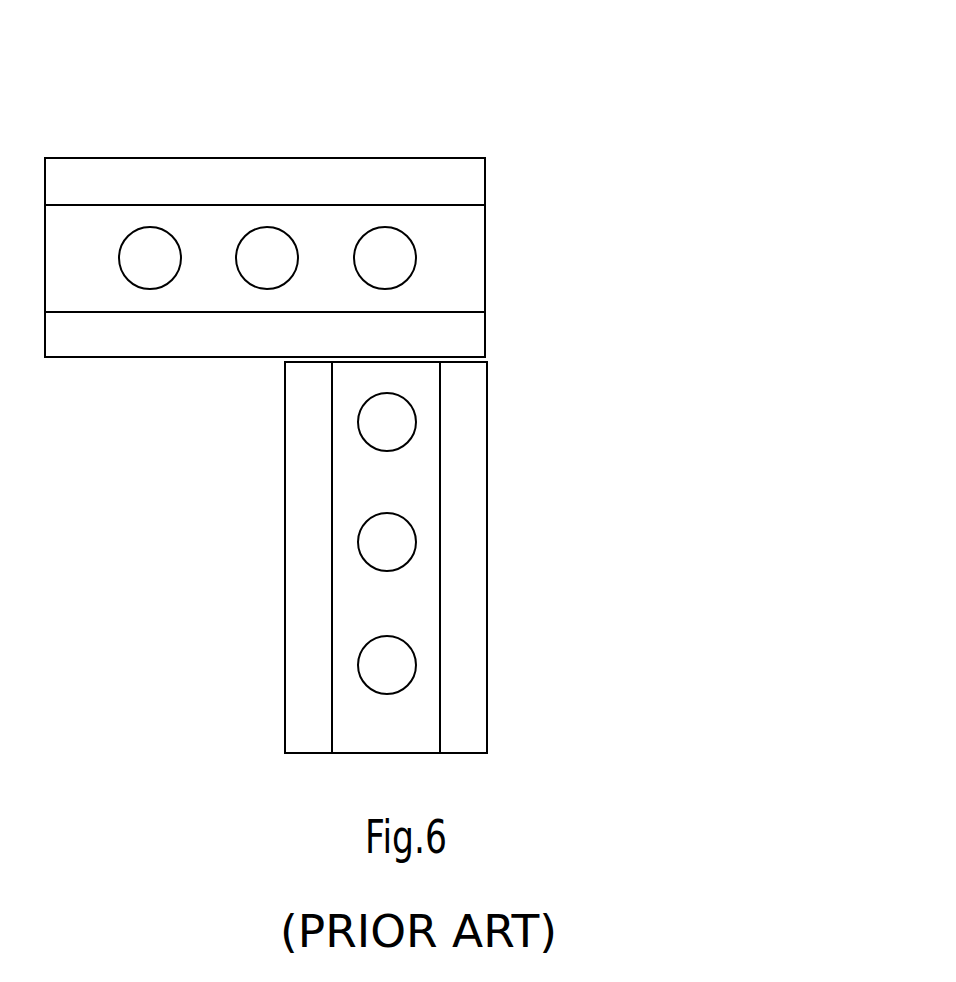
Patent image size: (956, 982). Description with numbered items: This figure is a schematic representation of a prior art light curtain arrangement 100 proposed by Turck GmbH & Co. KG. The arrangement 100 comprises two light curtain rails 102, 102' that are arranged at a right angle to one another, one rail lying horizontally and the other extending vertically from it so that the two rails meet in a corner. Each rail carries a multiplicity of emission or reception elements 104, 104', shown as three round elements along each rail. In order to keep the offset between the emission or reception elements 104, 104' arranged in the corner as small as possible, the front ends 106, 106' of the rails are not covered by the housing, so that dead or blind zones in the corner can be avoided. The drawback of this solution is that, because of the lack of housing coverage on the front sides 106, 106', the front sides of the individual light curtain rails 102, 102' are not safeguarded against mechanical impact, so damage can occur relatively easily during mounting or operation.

The light curtain arrangement 100 is at (600, 265).
The light curtain rail 102 is at (326, 186).
The light curtain rail 102' is at (498, 540).
The emission or reception elements 104 is at (245, 154).
The emission or reception elements 104' is at (496, 544).
The front end 106 is at (322, 258).
The front end 106' is at (483, 345).